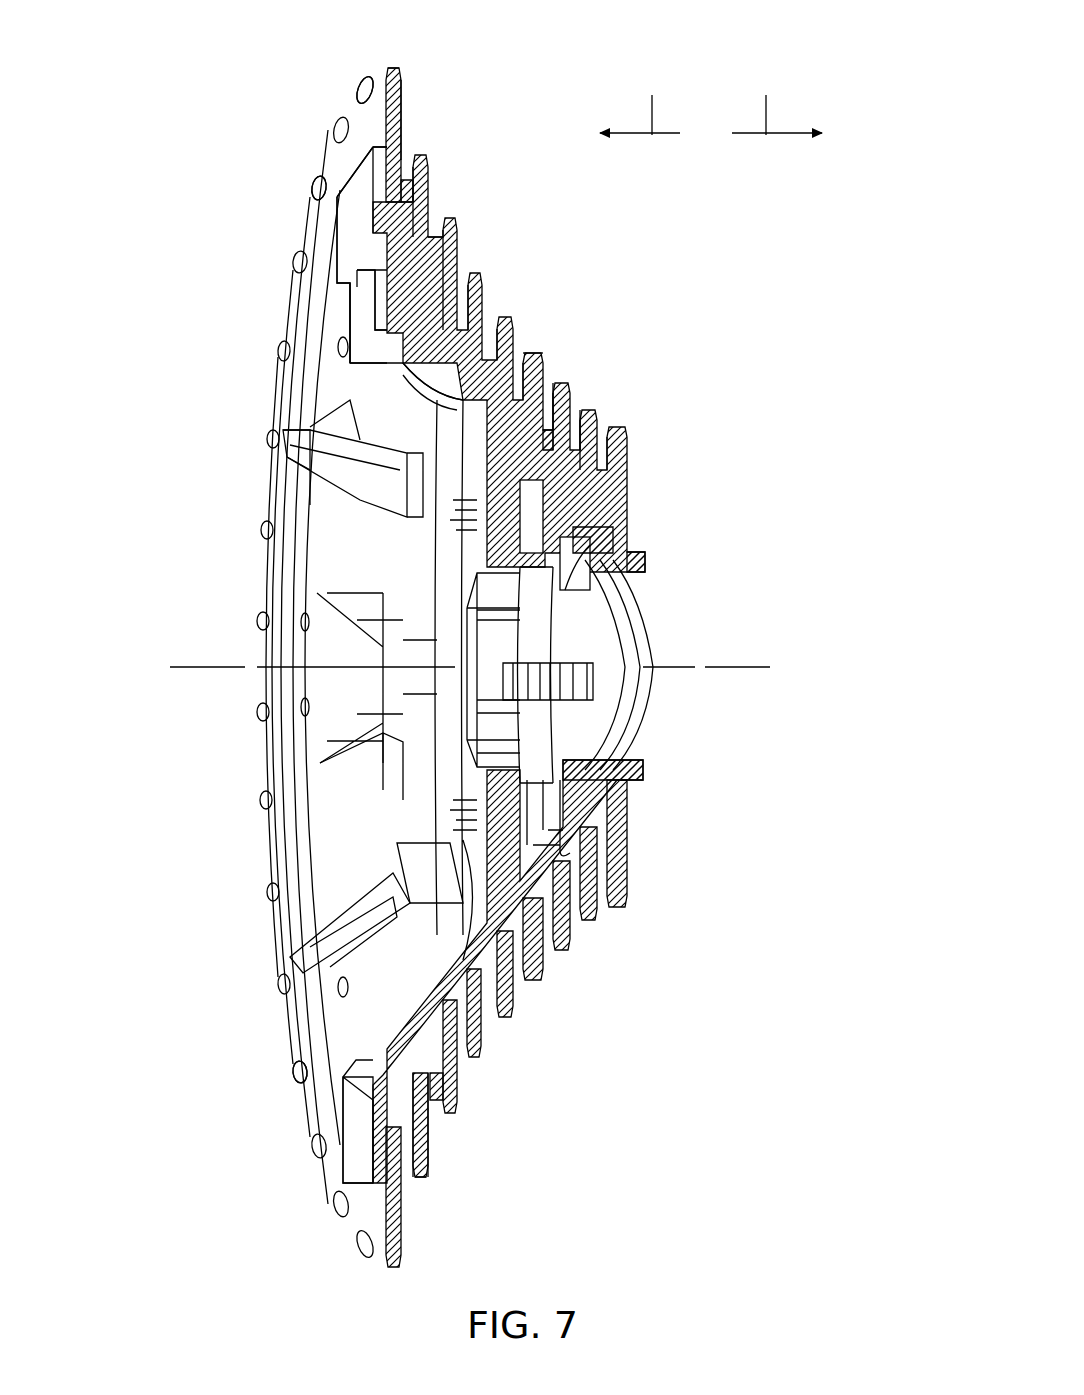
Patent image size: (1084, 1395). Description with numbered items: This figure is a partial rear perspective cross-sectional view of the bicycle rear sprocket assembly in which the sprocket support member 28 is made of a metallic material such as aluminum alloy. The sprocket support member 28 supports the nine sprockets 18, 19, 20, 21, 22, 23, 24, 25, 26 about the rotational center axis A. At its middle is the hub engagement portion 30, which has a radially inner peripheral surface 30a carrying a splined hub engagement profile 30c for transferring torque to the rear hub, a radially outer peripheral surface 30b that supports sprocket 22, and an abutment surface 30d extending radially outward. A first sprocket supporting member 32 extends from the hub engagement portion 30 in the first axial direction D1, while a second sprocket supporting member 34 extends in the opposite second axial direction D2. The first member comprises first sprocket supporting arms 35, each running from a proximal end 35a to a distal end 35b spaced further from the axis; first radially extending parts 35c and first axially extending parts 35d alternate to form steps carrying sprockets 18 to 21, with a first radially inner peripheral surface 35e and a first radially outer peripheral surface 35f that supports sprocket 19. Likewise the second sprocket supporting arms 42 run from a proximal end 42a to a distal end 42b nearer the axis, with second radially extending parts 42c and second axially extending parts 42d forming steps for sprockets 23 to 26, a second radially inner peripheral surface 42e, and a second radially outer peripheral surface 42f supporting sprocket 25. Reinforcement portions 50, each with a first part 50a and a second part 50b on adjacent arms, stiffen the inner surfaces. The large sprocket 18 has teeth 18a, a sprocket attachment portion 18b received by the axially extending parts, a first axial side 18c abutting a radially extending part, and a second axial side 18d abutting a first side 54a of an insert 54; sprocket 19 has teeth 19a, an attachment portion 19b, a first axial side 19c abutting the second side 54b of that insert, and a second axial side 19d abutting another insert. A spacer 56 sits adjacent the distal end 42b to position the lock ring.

The sprocket 18 is at (405, 1258).
The sprocket teeth 18a is at (390, 64).
The sprocket attachment portion 18b is at (388, 178).
The first axial side 18c is at (372, 128).
The second axial side 18d is at (402, 110).
The sprocket 19 is at (430, 1172).
The teeth 19a is at (425, 1185).
The sprocket attachment portion 19b is at (410, 1048).
The first axial side 19c is at (400, 1098).
The second axial side 19d is at (430, 1148).
The sprocket 20 is at (462, 1108).
The sprocket 21 is at (488, 1056).
The sprocket 22 is at (512, 1012).
The sprocket 23 is at (543, 975).
The sprocket 24 is at (572, 945).
The sprocket 25 is at (598, 915).
The sprocket 26 is at (628, 898).
The sprocket support member 28 is at (335, 1112).
The hub engagement portion 30 is at (462, 543).
The radially inner peripheral surface 30a is at (470, 700).
The radially outer peripheral surface 30b is at (540, 375).
The hub engagement profile 30c is at (495, 640).
The abutment surface 30d is at (455, 748).
The first sprocket supporting member 32 is at (356, 236).
The second sprocket supporting member 34 is at (600, 545).
The first sprocket supporting arm 35 is at (491, 368).
The proximal end 35a is at (457, 413).
The distal end 35b is at (358, 162).
The first radially extending part 35c is at (385, 297).
The first axially extending part 35d is at (375, 248).
The first radially inner peripheral surface 35e is at (357, 207).
The first radially outer peripheral surface 35f is at (430, 218).
The second sprocket supporting arm 42 is at (493, 971).
The proximal end 42a is at (570, 443).
The distal end 42b is at (648, 566).
The second radially extending part 42c is at (567, 787).
The second axially extending part 42d is at (580, 740).
The second radially inner peripheral surface 42e is at (560, 578).
The second radially outer peripheral surface 42f is at (588, 490).
The reinforcement portion 50 is at (357, 886).
The first part 50a is at (323, 462).
The second part 50b is at (323, 486).
The insert 54 is at (408, 180).
The first side 54a is at (375, 1140).
The second side 54b is at (425, 1135).
The spacer 56 is at (648, 770).
The rotational center axis A is at (738, 668).
The first axial direction D1 is at (640, 99).
The second axial direction D2 is at (777, 99).